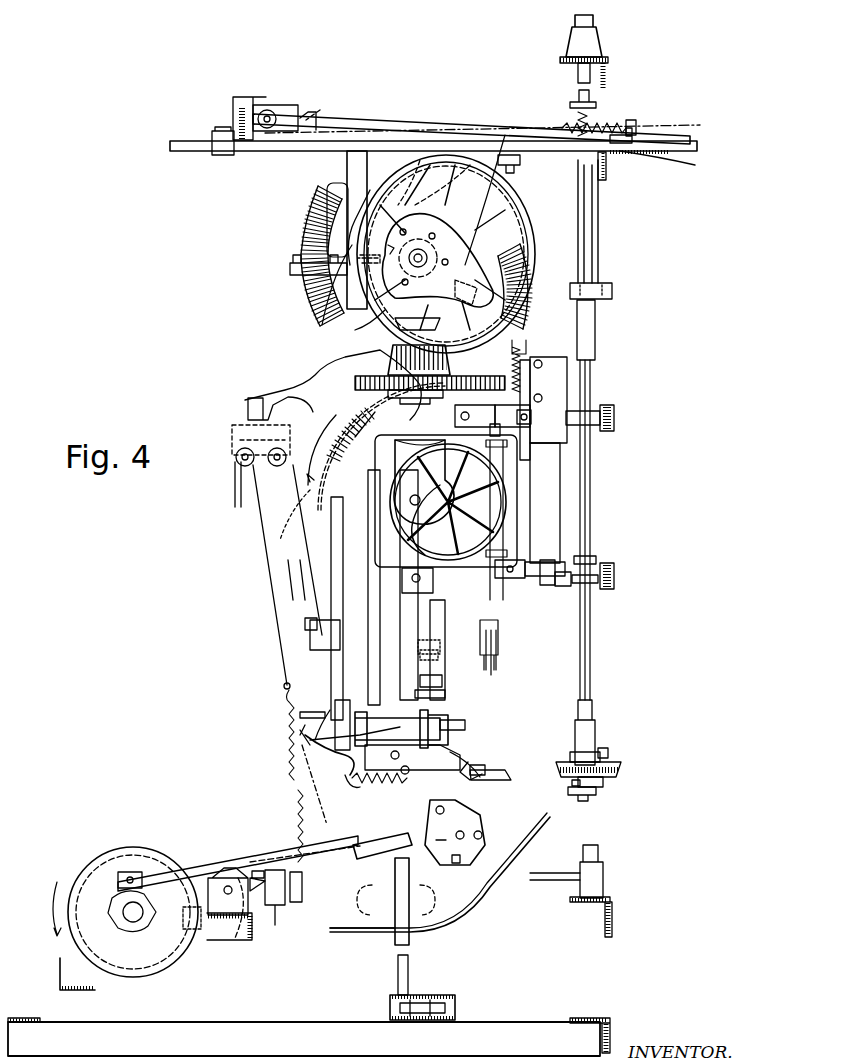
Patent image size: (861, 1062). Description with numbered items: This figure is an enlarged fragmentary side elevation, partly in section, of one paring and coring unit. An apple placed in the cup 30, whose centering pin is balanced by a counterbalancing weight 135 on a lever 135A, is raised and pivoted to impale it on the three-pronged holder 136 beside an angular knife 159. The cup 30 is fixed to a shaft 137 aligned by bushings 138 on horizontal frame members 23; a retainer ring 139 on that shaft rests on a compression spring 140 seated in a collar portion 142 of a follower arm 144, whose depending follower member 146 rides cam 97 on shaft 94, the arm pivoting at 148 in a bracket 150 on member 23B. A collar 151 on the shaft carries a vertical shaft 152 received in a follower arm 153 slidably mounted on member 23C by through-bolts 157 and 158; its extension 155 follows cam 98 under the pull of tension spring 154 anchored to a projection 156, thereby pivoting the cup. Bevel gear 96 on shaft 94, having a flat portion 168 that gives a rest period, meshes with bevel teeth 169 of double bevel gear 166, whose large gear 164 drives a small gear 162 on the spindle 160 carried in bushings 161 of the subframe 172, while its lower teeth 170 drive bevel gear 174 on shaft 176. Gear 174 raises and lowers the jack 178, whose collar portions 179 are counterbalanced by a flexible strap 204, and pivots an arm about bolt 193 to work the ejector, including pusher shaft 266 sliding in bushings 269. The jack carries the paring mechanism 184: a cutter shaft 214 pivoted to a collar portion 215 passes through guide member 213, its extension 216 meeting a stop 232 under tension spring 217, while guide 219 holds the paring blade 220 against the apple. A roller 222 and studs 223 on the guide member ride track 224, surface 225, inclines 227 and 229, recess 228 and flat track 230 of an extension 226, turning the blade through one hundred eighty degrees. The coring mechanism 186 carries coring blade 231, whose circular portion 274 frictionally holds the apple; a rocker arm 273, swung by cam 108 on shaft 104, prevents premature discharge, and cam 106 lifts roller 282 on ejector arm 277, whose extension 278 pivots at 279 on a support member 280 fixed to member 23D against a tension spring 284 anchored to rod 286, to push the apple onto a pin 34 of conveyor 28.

The bushings 138 is at (596, 38).
The horizontal members 23 is at (606, 72).
The compression spring 140 is at (582, 130).
The retainer ring 139 is at (594, 104).
The tension spring 154 is at (602, 132).
The horizontal member 23C is at (170, 148).
The projection 156 is at (675, 149).
The collar portion 142 is at (610, 166).
The horizontal member 23B is at (238, 118).
The bracket 150 is at (258, 105).
The pivot 148 is at (304, 118).
The through-bolt 157 is at (320, 100).
The follower arm 144 is at (414, 127).
The through-bolt 158 is at (506, 156).
The follower member 146 is at (450, 177).
The follower arm 153 is at (320, 153).
The bevel gear 96 is at (320, 214).
The perpendicular extension 155 is at (347, 246).
The cam 97 is at (492, 258).
The shaft 94 is at (420, 260).
The cam 98 is at (366, 260).
The flat portion 168 is at (355, 345).
The bevel teeth 169 is at (446, 338).
The double bevel gear 166 is at (486, 380).
The bevel teeth 170 is at (410, 410).
The large gear 164 is at (465, 414).
The bushings 161 is at (535, 415).
The vertically extending shaft 152 is at (600, 236).
The collar 151 is at (610, 278).
The shaft 137 is at (592, 650).
The small gear 162 is at (551, 380).
The bolt 193 is at (543, 364).
The pusher shaft 266 is at (529, 486).
The bushings 269 is at (546, 424).
The spindle 160 is at (500, 505).
The shaft 176 is at (415, 495).
The extension 226 is at (430, 520).
The subframe 172 is at (273, 397).
The flexible strap 204 is at (235, 485).
The bevel gear 174 is at (318, 490).
The rod 286 is at (305, 555).
The rearmost portion 225 is at (420, 640).
The flat vertical track 230 is at (420, 623).
The incline surface 229 is at (432, 641).
The angular knife 159 is at (480, 646).
The spiked holder 136 is at (500, 652).
The incline 227 is at (432, 676).
The track 224 is at (433, 688).
The roller 222 is at (442, 718).
The studs 223 is at (440, 727).
The collar portions 179 is at (323, 650).
The recess portion 228 is at (422, 658).
The stop 232 is at (310, 716).
The perpendicular extension 216 is at (392, 738).
The collar portion 215 is at (345, 750).
The jack 178 is at (417, 759).
The paring mechanism 184 is at (499, 750).
The guide 219 is at (483, 767).
The paring blade 220 is at (503, 780).
The guide member 213 is at (470, 777).
The cutter shaft 214 is at (390, 790).
The tension spring 217 is at (360, 792).
The tension spring 284 is at (300, 823).
The coring mechanism 186 is at (487, 835).
The cup 30 is at (610, 758).
The lever 135A is at (586, 775).
The counterbalancing weight 135 is at (588, 787).
The shaft 104 is at (128, 908).
The cam 106 is at (141, 918).
The cam 108 is at (132, 970).
The roller 282 is at (128, 874).
The ejector arm 277 is at (216, 864).
The pivot 279 is at (240, 880).
The support member 280 is at (225, 917).
The horizontal member 23D is at (252, 937).
The extension 278 is at (237, 964).
The circular portion 274 is at (382, 882).
The coring blade 231 is at (395, 934).
The rocker arm 273 is at (446, 930).
The pins 34 is at (406, 978).
The conveyor 28 is at (465, 1004).